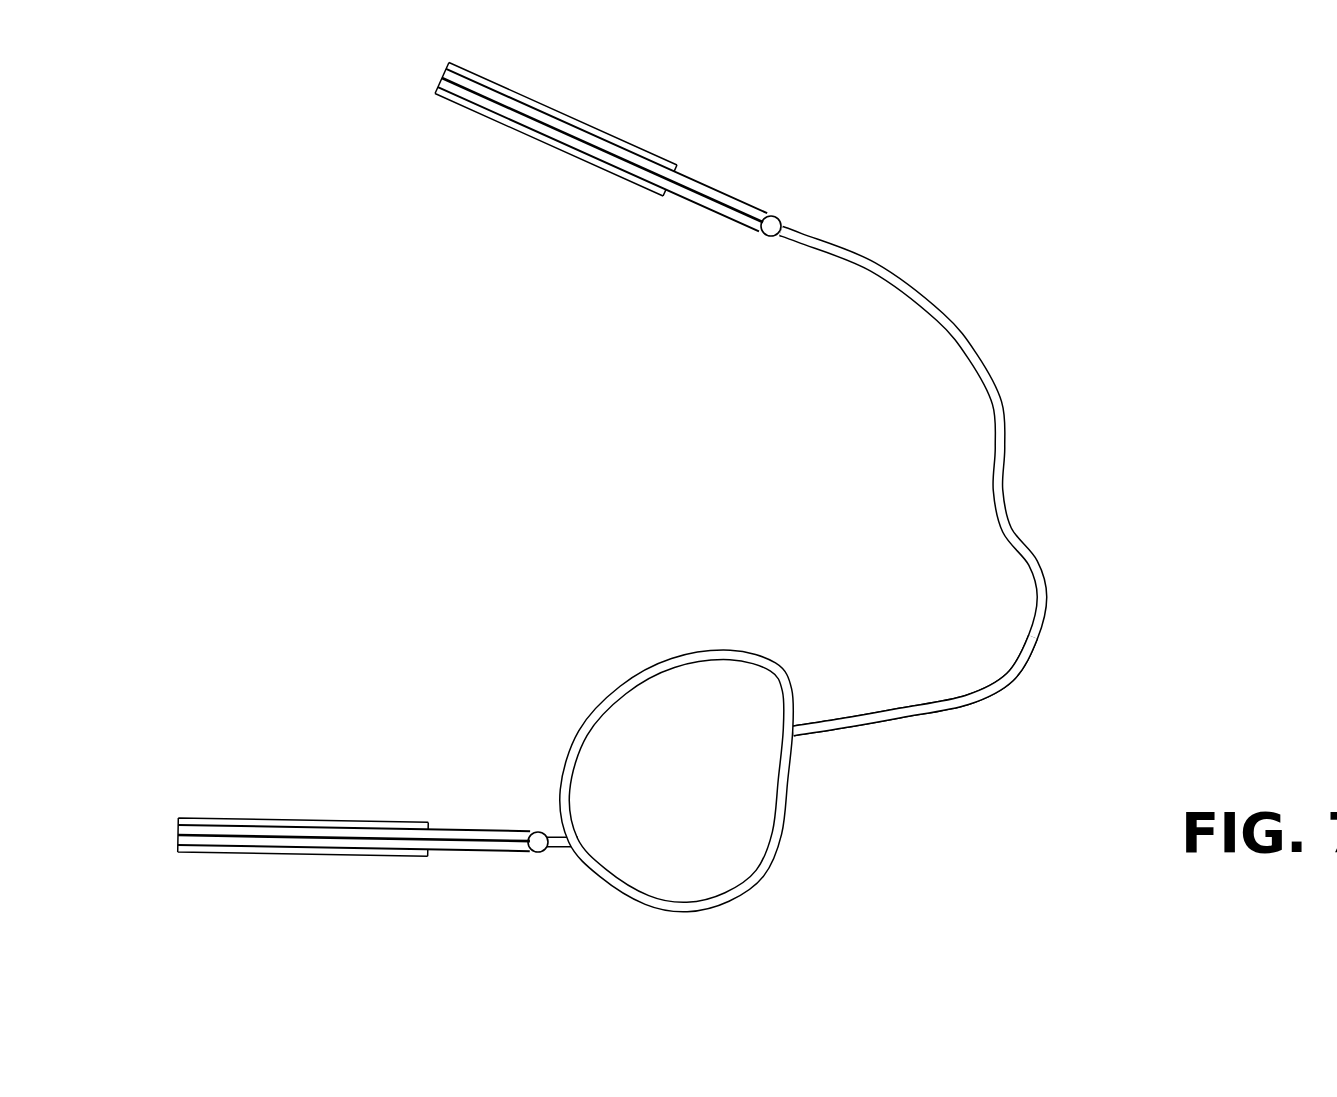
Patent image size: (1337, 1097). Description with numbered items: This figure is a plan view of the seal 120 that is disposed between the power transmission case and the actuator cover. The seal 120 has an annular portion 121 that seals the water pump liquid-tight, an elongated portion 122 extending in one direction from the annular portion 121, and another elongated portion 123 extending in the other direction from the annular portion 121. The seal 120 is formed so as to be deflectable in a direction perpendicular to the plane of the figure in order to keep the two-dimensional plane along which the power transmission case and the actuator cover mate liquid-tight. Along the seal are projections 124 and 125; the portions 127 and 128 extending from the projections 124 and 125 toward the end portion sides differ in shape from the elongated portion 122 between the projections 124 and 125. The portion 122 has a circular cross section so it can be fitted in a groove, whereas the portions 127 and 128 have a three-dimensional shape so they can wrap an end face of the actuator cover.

The seal 120 is at (1006, 402).
The annular portion 121 is at (781, 841).
The elongated portion 122 is at (961, 712).
The another elongated portion 123 is at (304, 796).
The projection 124 is at (786, 222).
The projection 125 is at (546, 832).
The end portion side portion 127 is at (354, 822).
The end portion side portion 128 is at (612, 139).